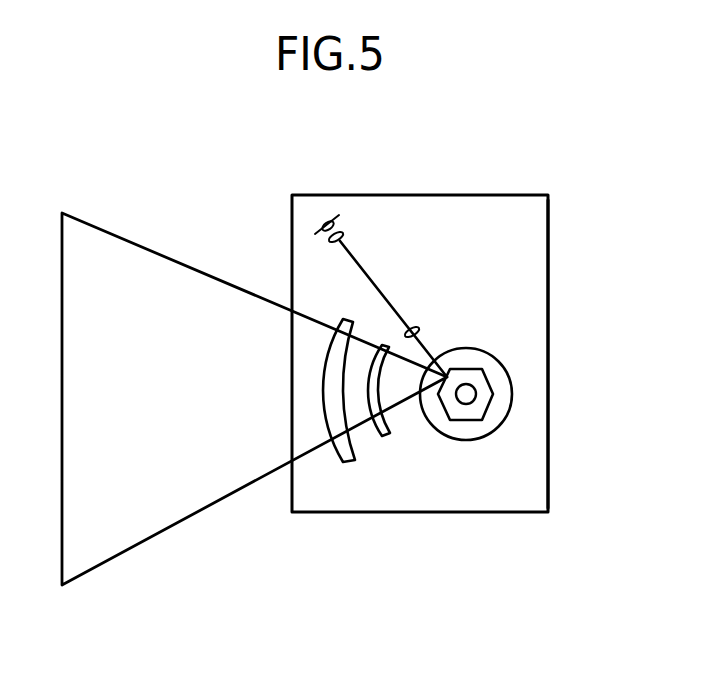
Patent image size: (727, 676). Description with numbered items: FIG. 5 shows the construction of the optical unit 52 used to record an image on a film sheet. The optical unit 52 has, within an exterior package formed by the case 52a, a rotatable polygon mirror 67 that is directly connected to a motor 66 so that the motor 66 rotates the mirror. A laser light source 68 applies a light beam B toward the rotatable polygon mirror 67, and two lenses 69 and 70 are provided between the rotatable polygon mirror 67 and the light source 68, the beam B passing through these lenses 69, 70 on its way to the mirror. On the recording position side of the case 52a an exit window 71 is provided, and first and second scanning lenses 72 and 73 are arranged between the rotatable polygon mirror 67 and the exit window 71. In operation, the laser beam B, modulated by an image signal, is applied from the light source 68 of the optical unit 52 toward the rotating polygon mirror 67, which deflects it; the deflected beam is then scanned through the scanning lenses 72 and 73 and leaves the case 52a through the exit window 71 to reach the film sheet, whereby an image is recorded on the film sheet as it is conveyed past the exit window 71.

The light beam B is at (113, 275).
The optical unit 52 is at (565, 242).
The case 52a is at (549, 312).
The motor 66 is at (488, 420).
The rotatable polygon mirror 67 is at (483, 392).
The light source 68 is at (328, 222).
The lens 69 is at (342, 234).
The lens 70 is at (417, 328).
The exit window 71 is at (293, 445).
The first scanning lens 72 is at (383, 440).
The second scanning lens 73 is at (345, 450).